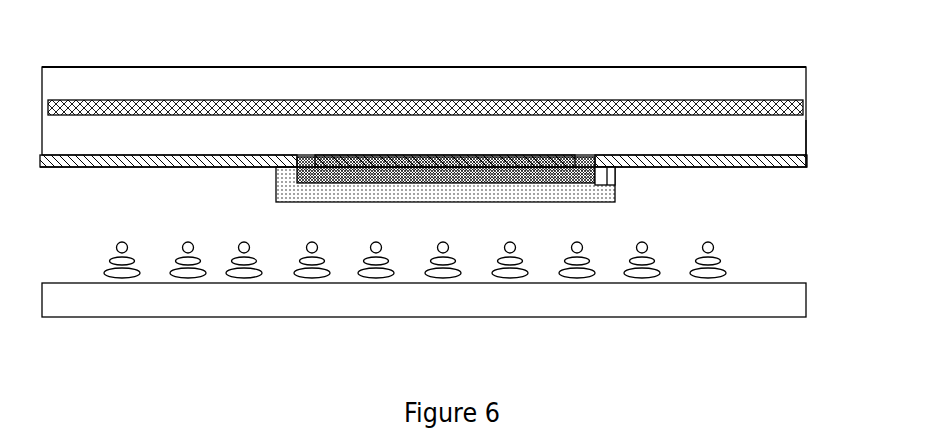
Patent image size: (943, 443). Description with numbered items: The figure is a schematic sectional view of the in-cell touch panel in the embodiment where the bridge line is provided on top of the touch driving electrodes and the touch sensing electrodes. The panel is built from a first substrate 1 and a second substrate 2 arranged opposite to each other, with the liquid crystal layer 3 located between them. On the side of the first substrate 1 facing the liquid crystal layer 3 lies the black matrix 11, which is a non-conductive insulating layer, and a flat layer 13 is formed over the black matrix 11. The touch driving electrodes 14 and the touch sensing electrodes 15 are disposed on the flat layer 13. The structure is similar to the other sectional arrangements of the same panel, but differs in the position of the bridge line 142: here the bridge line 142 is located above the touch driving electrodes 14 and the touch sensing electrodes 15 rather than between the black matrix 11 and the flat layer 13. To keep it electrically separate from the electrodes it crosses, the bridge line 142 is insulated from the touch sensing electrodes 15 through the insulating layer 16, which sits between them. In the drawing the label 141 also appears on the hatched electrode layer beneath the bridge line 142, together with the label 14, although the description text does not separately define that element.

The first substrate 1 is at (424, 85).
The black matrix 11 is at (425, 70).
The flat layer 13 is at (820, 120).
The touch driving electrodes 14 is at (423, 271).
The first conductive sub-layer 141 is at (423, 92).
The bridge line 142 is at (634, 104).
The touch sensing electrodes 15 is at (446, 103).
The insulating layer 16 is at (445, 115).
The second substrate 2 is at (424, 327).
The liquid crystal layer 3 is at (433, 304).